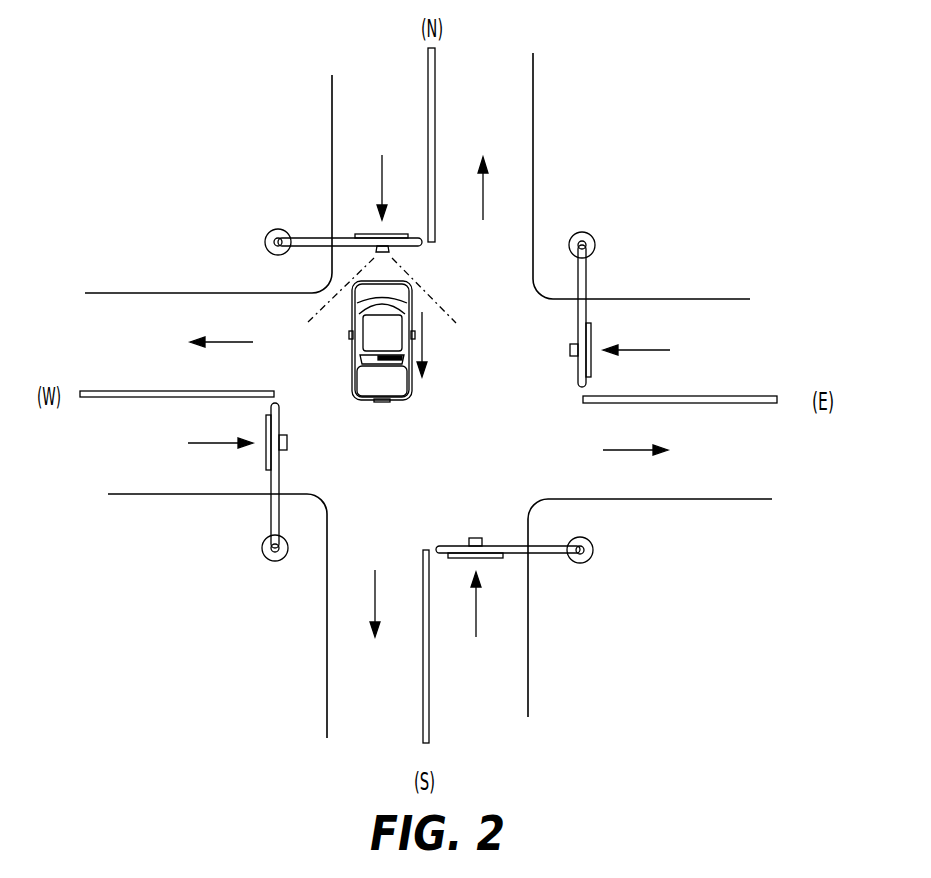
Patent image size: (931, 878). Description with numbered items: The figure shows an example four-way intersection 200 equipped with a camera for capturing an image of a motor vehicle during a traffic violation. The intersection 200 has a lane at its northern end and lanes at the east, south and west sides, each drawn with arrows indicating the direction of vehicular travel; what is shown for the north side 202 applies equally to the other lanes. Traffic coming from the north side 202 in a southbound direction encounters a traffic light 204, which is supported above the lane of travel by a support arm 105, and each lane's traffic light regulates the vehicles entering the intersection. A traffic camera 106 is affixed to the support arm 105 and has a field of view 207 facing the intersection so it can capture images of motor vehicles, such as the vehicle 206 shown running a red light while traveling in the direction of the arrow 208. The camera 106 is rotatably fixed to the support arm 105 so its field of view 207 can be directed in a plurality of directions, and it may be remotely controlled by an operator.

The 4-way intersection 200 is at (428, 377).
The north side 202 is at (486, 72).
The support arm 105 is at (363, 208).
The traffic light 204 is at (368, 234).
The traffic camera 106 is at (392, 251).
The vehicle 206 is at (352, 333).
The field of view 207 is at (443, 310).
The arrow 208 is at (426, 347).